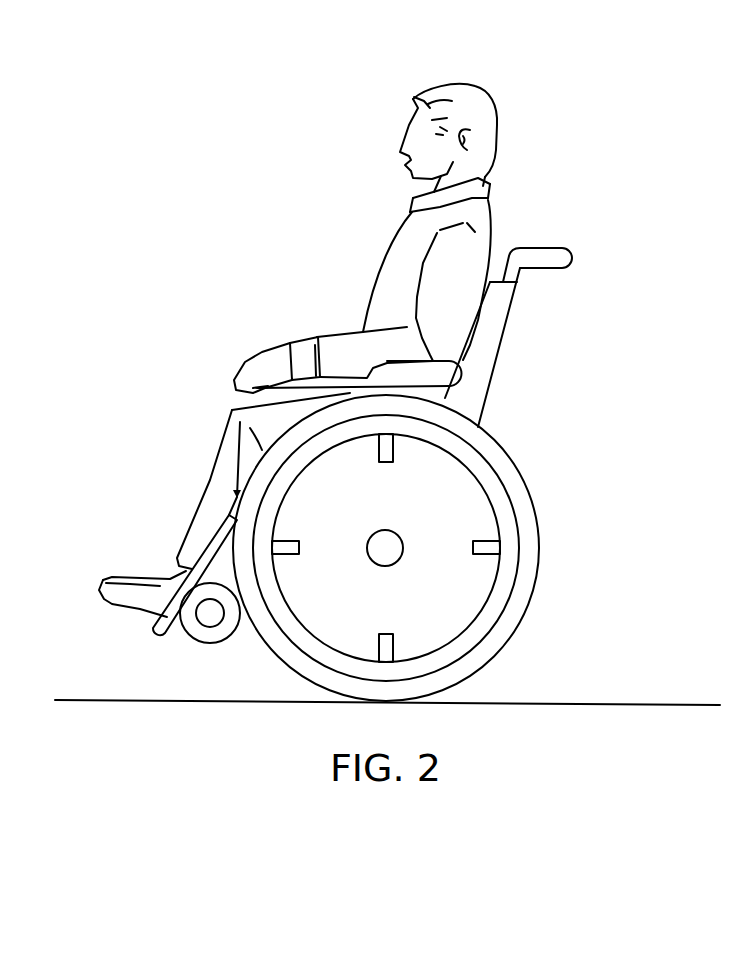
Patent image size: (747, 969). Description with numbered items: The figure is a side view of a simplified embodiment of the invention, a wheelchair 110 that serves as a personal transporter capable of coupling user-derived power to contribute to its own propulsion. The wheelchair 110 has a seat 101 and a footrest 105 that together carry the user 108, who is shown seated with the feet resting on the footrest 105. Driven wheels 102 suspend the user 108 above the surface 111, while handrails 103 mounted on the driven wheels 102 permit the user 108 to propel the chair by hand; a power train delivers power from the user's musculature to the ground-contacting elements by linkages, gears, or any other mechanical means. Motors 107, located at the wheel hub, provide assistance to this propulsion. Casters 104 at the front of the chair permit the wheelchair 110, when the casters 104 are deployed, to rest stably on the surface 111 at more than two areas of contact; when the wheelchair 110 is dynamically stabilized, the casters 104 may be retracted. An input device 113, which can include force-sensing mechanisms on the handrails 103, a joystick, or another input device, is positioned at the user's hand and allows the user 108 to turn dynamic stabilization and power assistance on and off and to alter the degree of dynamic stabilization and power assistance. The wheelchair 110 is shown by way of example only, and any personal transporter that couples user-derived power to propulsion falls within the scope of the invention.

The seat 101 is at (508, 318).
The driven wheels 102 is at (503, 445).
The handrails 103 is at (508, 497).
The casters 104 is at (198, 641).
The footrest 105 is at (152, 630).
The motors 107 is at (403, 554).
The user 108 is at (494, 133).
The wheelchair 110 is at (420, 50).
The surface 111 is at (660, 703).
The input device 113 is at (283, 378).